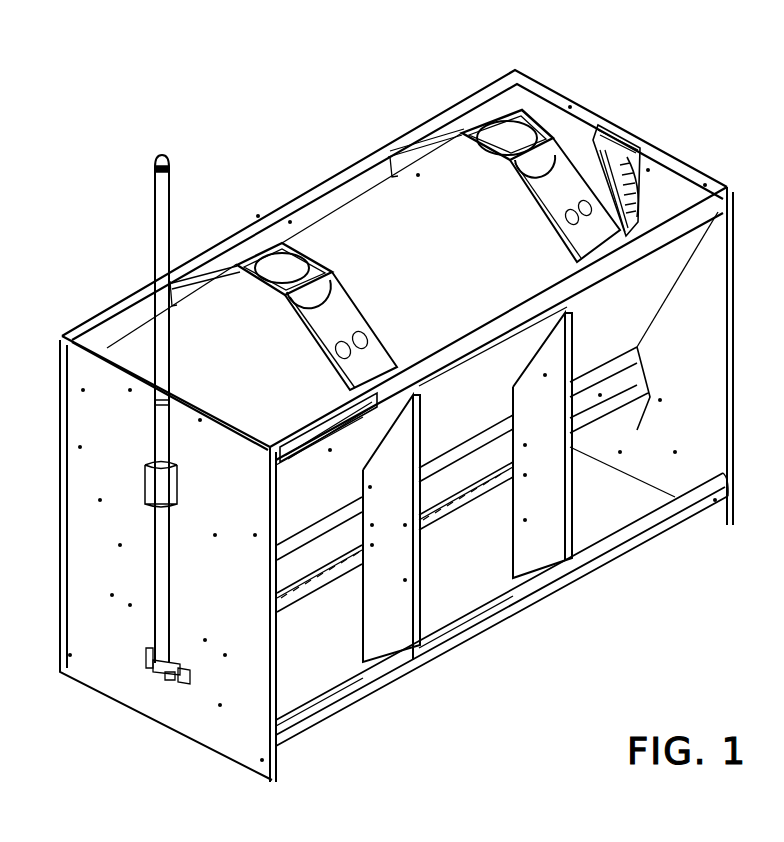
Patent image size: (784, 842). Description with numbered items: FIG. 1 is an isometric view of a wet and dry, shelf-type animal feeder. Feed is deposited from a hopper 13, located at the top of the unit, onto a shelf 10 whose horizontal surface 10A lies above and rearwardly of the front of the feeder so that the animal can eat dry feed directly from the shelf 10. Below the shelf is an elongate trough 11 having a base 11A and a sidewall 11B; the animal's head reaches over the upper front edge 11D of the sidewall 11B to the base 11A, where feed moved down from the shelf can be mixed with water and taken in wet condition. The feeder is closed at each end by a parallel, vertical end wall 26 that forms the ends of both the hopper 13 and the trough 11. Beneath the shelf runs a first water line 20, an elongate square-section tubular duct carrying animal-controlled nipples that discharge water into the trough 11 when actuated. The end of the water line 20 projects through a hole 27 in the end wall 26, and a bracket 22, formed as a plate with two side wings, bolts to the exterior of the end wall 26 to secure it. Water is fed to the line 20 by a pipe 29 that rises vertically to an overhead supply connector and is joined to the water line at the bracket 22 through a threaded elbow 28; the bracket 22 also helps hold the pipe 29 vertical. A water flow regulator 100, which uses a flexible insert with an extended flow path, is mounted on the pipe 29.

The shelf 10 is at (466, 490).
The horizontal surface 10A is at (297, 567).
The trough 11 is at (520, 597).
The base 11A is at (283, 693).
The sidewall 11B is at (410, 663).
The upper front edge 11D is at (485, 617).
The hopper 13 is at (466, 372).
The first water line 20 is at (170, 660).
The bracket 22 is at (180, 677).
The end wall 26 is at (217, 738).
The hole 27 is at (190, 665).
The elbow 28 is at (173, 670).
The pipe 29 is at (160, 522).
The water flow regulator 100 is at (170, 483).